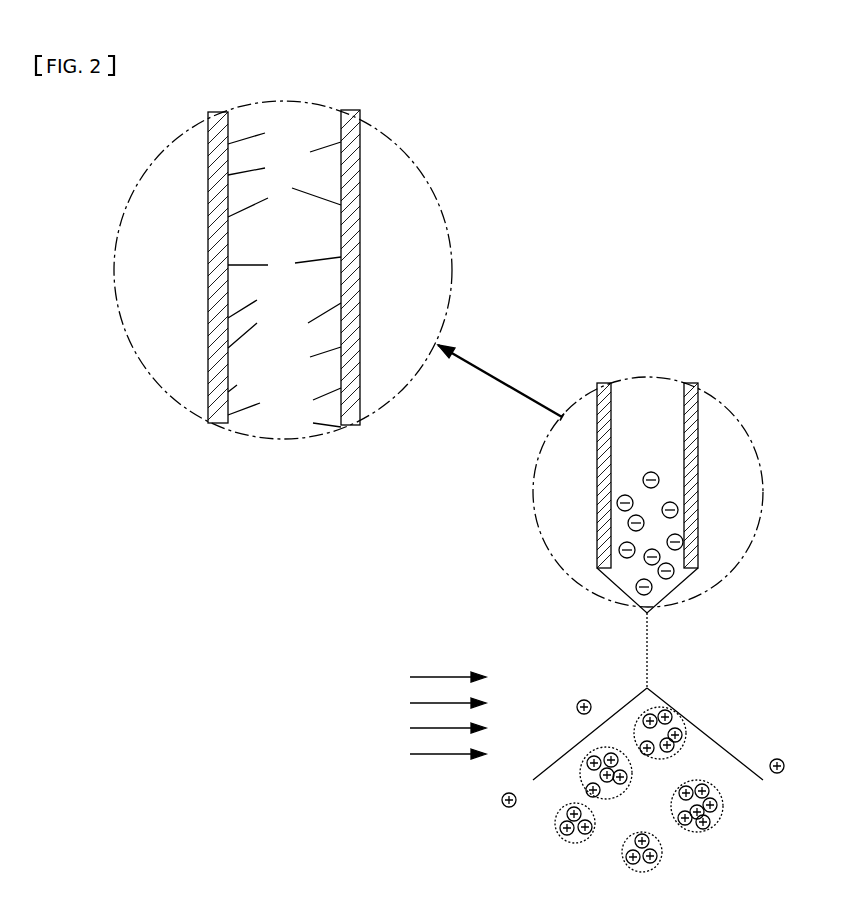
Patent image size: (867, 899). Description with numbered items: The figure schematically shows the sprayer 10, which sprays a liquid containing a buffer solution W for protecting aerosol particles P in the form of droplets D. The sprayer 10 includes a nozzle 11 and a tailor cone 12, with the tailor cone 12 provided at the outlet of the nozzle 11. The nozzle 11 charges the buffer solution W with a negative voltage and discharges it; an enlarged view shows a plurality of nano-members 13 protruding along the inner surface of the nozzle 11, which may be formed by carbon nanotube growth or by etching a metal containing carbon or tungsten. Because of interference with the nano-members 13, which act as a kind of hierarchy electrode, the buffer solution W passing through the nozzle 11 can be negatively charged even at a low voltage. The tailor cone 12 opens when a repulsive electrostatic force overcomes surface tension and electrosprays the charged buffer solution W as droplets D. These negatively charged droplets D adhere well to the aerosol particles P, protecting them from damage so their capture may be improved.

The sprayer 10 is at (660, 337).
The nozzle 11 is at (352, 165).
The tailor cone 12 is at (672, 570).
The nano-members 13 is at (308, 323).
The buffer solution W is at (664, 412).
The aerosol particles P is at (428, 715).
The droplets D is at (630, 785).